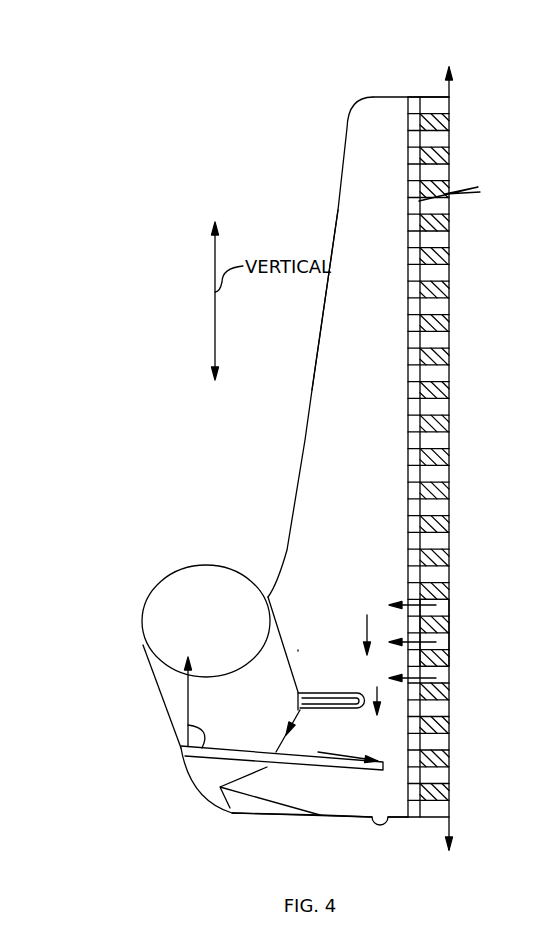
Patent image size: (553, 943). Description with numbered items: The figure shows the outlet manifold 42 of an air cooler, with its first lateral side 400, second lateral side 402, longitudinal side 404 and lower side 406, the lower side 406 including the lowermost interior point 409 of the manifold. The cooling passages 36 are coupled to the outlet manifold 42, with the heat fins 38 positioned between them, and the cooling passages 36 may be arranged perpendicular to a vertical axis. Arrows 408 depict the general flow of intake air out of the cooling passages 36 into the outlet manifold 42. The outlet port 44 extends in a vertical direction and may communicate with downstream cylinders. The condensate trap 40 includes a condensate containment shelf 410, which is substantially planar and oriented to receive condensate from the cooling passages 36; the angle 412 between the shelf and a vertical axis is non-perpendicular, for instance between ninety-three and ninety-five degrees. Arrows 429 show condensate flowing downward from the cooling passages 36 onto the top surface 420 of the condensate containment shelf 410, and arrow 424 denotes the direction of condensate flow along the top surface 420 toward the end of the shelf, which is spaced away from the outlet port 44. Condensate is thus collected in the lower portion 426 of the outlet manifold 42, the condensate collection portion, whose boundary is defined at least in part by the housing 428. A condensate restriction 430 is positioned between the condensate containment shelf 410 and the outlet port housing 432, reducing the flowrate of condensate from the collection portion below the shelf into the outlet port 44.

The cooling passages 36 is at (442, 677).
The heat fins 38 is at (448, 553).
The condensate trap 40 is at (185, 810).
The outlet manifold 42 is at (155, 86).
The outlet port 44 is at (273, 567).
The first lateral side 400 is at (333, 592).
The second lateral side 402 is at (383, 826).
The longitudinal side 404 is at (298, 485).
The lower side 406 is at (320, 818).
The arrows 408 is at (400, 638).
The lowermost interior point 409 is at (398, 822).
The condensate containment shelf 410 is at (300, 710).
The angle 412 is at (205, 725).
The top surface 420 is at (250, 750).
The arrow 424 is at (335, 755).
The lower portion 426 is at (270, 791).
The housing 428 is at (337, 782).
The arrows 429 is at (367, 628).
The condensate restriction 430 is at (172, 740).
The outlet port housing 432 is at (180, 698).